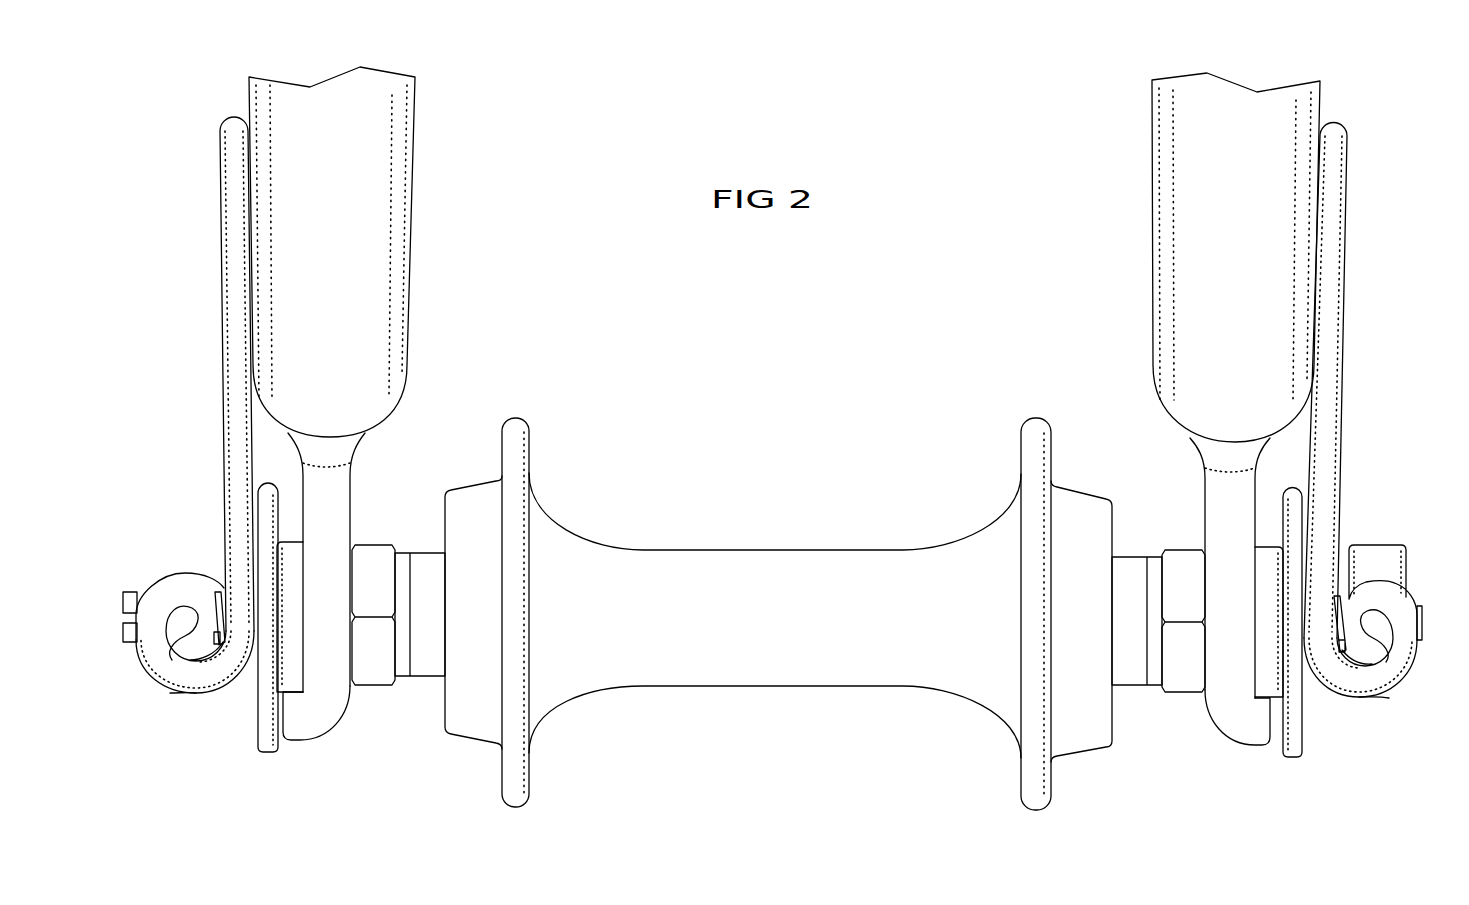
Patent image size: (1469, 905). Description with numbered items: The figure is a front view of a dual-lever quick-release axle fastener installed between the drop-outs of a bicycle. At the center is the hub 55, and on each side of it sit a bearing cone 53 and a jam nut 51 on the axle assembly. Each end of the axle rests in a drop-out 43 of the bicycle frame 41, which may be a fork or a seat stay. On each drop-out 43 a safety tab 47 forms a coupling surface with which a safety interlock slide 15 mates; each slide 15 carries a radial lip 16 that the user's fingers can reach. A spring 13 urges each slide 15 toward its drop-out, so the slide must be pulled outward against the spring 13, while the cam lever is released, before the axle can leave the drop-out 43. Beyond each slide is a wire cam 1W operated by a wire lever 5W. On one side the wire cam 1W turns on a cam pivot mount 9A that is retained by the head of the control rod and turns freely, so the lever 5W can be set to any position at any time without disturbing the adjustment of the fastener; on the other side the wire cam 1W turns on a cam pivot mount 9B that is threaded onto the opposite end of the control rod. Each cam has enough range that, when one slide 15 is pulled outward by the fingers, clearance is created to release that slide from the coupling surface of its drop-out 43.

The wire cam 1W is at (170, 693).
The wire lever 5W is at (224, 258).
The cam pivot mount for wire cam on head of control rod 9A is at (172, 580).
The cam pivot mount for wire cam on threaded end of control rod 9B is at (1408, 570).
The spring 13 is at (219, 592).
The safety interlock slide 15 is at (265, 676).
The radial finger grip or lip on slide 16 is at (260, 747).
The bicycle frame 41 is at (331, 152).
The drop-out 43 is at (347, 489).
The safety tab 47 is at (291, 730).
The jam nut 51 is at (373, 688).
The bearing cone 53 is at (425, 678).
The hub 55 is at (968, 528).